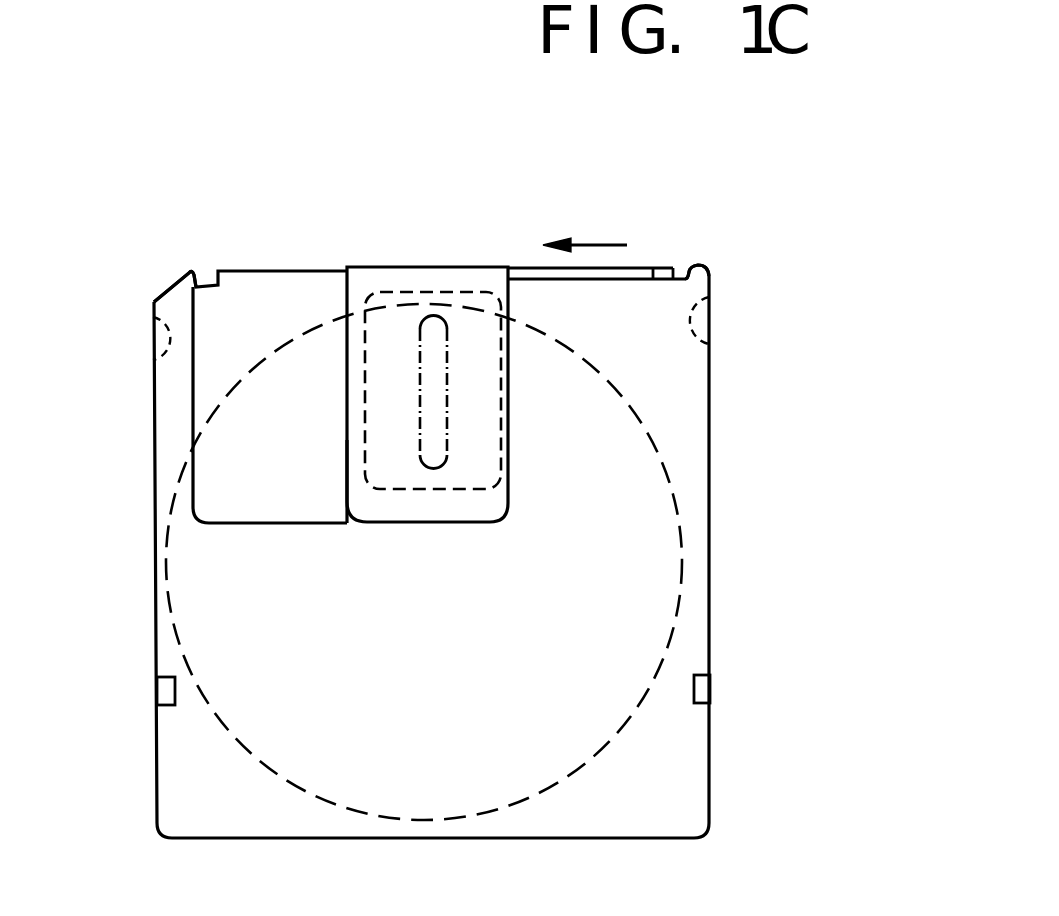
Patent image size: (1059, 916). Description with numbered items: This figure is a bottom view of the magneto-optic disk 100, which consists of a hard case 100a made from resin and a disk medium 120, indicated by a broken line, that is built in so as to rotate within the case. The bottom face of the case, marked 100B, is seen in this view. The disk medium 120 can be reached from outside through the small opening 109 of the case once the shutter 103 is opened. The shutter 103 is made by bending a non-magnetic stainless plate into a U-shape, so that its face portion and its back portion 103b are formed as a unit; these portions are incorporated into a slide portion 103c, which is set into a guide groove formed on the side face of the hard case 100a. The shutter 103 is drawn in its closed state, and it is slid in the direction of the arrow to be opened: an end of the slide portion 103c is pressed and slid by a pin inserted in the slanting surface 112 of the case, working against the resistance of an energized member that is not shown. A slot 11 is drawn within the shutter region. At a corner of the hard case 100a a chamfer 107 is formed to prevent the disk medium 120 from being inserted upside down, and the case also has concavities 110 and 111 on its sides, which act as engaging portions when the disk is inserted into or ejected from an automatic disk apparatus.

The magneto-optic disk 100 is at (435, 253).
The hard case 100a is at (710, 752).
The cartridge bottom surface 100B is at (429, 593).
The shutter 103 is at (399, 373).
The back portion 103b is at (355, 440).
The slide portion 103c is at (663, 268).
The chamfer 107 is at (165, 292).
The small opening 109 is at (503, 426).
The slot opening 11 is at (447, 362).
The concavity 110 is at (165, 690).
The concavity 111 is at (705, 688).
The slanting surface 112 is at (686, 266).
The disk medium 120 is at (683, 595).